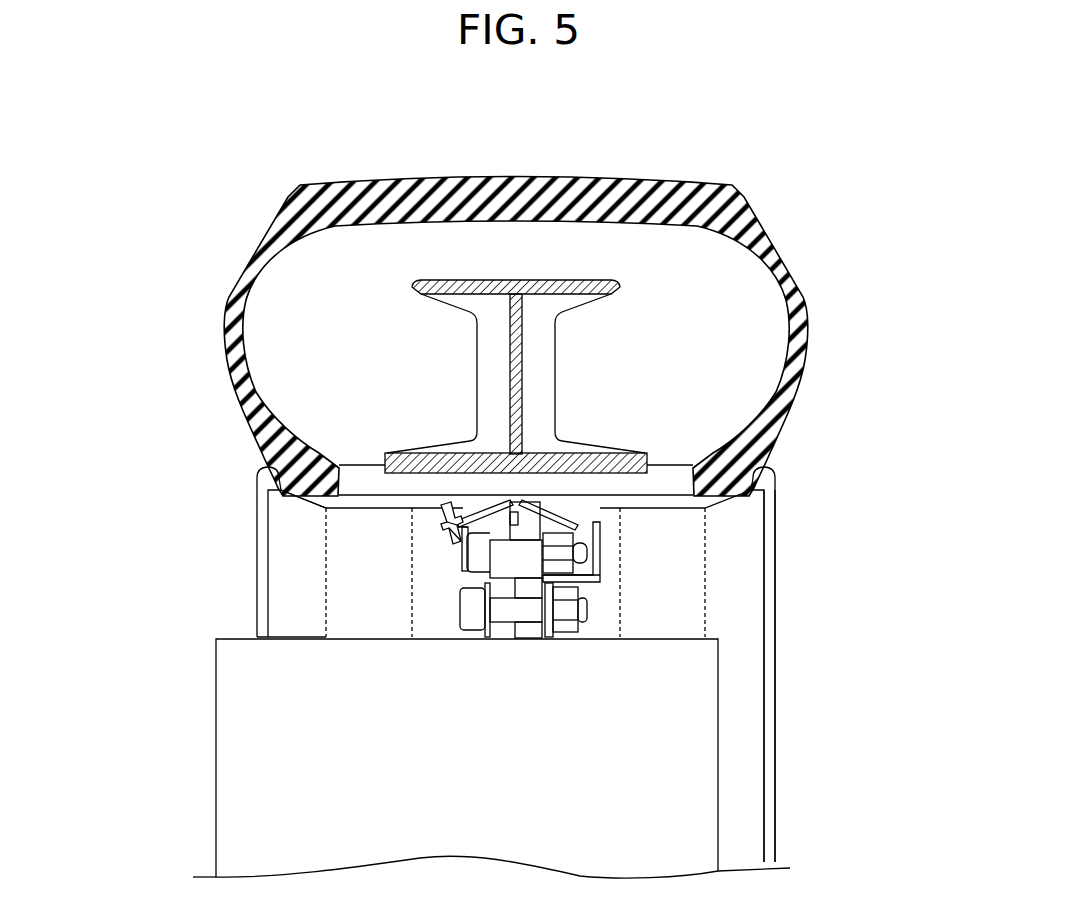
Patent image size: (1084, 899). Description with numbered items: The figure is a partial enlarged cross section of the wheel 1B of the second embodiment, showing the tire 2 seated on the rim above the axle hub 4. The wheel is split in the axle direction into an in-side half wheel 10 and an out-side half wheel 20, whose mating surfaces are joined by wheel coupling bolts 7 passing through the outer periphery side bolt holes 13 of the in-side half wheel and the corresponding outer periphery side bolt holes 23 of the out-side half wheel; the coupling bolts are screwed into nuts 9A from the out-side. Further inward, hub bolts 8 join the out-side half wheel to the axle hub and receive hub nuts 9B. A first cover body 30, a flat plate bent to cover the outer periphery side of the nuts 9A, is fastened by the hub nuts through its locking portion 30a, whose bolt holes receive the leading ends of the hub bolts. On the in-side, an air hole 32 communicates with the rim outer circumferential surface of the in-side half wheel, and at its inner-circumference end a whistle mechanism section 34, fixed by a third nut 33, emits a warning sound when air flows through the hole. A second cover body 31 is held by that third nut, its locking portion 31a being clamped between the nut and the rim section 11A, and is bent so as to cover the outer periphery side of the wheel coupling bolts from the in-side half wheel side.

The tire 2 is at (740, 199).
The axle hub 4 is at (703, 777).
The wheel coupling bolts 7 is at (480, 572).
The hub bolts 8 is at (468, 617).
The nuts 9A is at (600, 532).
The hub nuts 9B is at (598, 630).
The in-side half wheel 10 is at (246, 604).
The rim section 11A is at (324, 503).
The outer periphery side bolt holes 13 is at (480, 564).
The wheel 1B is at (788, 585).
The out-side half wheel 20 is at (788, 654).
The outer periphery side bolt holes 23 is at (580, 553).
The first cover body 30 is at (580, 526).
The locking portion 30a is at (556, 603).
The second cover body 31 is at (470, 556).
The locking portion 31a is at (445, 510).
The air hole 32 is at (473, 503).
The third nut 33 is at (467, 556).
The whistle mechanism section 34 is at (440, 541).